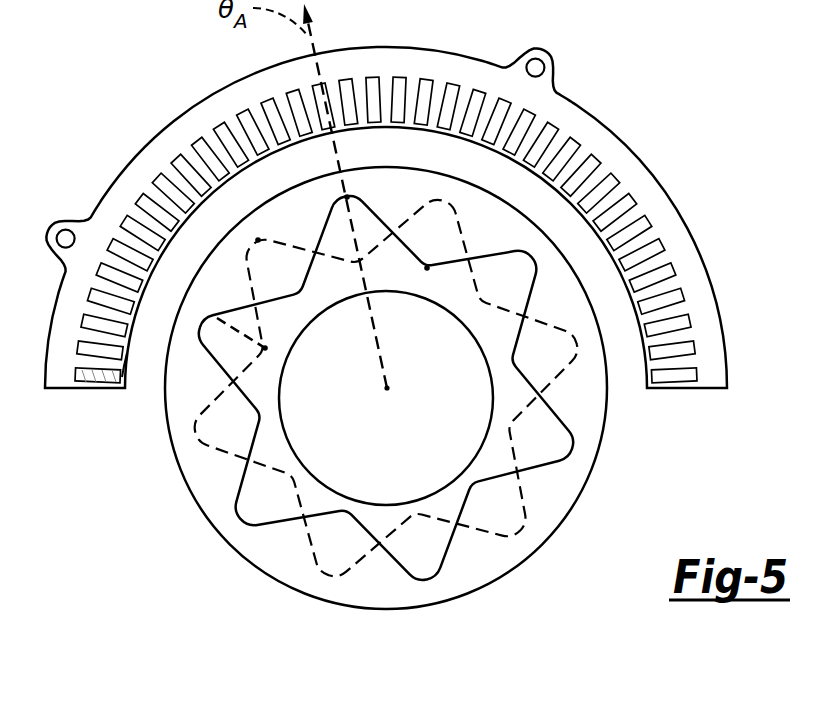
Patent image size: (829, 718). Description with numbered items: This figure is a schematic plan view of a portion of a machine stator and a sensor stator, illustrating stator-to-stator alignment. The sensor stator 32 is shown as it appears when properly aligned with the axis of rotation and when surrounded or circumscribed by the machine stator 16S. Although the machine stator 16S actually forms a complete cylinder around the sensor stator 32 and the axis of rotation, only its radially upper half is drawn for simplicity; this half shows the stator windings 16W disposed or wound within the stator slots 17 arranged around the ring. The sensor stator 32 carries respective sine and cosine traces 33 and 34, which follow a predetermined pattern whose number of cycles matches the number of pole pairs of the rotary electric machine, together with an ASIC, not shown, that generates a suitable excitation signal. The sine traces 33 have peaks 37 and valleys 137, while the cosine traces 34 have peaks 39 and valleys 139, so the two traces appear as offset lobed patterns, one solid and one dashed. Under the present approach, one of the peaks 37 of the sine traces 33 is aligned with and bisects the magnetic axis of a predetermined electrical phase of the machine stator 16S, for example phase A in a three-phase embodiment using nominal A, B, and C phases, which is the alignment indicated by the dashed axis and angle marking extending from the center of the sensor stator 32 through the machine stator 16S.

The machine stator 16S is at (166, 128).
The stator windings 16W is at (80, 357).
The stator slots 17 is at (132, 356).
The sensor stator 32 is at (553, 497).
The sine traces 33 is at (450, 552).
The cosine traces 34 is at (347, 572).
The peaks of the sine traces 37 is at (347, 197).
The valleys of the sine traces 137 is at (427, 268).
The peaks of the cosine traces 39 is at (258, 240).
The valleys of the cosine traces 139 is at (217, 318).